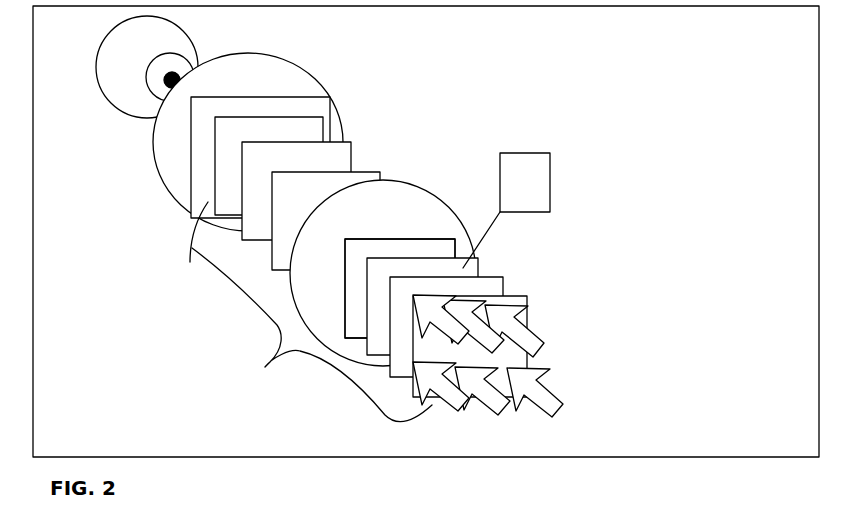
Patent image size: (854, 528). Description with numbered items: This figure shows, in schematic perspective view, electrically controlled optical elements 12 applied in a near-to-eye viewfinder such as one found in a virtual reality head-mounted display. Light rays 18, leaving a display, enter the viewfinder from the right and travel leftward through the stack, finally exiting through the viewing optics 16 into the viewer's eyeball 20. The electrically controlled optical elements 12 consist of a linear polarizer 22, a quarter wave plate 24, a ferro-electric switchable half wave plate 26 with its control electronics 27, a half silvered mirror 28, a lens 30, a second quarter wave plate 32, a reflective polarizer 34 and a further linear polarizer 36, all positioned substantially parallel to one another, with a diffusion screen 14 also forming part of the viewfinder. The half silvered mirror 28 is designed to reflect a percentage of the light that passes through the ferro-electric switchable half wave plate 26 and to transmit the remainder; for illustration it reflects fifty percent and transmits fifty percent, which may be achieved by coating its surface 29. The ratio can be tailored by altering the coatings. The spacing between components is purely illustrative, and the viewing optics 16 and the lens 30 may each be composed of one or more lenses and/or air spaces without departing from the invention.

The electrically controlled optical elements 12 is at (312, 335).
The diffusion screen 14 is at (190, 216).
The viewing optics 16 is at (165, 158).
The light rays 18 is at (458, 337).
The viewer's eyeball 20 is at (100, 88).
The linear polarizer 22 is at (522, 302).
The quarter wave plate 24 is at (497, 284).
The ferro-electric switchable half wave plate 26 is at (475, 271).
The control electronics 27 is at (551, 152).
The half silvered mirror 28 is at (446, 250).
The surface 29 is at (355, 325).
The lens 30 is at (437, 198).
The quarter wave plate 32 is at (380, 173).
The reflective polarizer 34 is at (350, 145).
The linear polarizer 36 is at (223, 203).